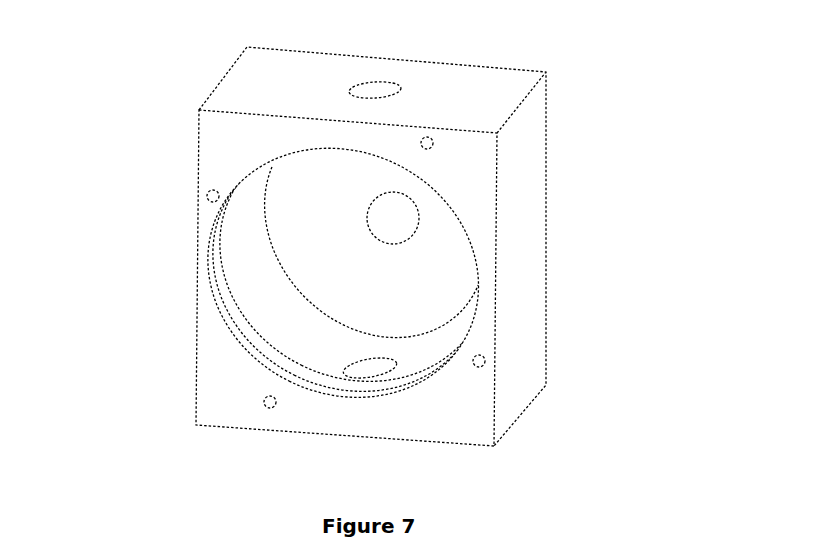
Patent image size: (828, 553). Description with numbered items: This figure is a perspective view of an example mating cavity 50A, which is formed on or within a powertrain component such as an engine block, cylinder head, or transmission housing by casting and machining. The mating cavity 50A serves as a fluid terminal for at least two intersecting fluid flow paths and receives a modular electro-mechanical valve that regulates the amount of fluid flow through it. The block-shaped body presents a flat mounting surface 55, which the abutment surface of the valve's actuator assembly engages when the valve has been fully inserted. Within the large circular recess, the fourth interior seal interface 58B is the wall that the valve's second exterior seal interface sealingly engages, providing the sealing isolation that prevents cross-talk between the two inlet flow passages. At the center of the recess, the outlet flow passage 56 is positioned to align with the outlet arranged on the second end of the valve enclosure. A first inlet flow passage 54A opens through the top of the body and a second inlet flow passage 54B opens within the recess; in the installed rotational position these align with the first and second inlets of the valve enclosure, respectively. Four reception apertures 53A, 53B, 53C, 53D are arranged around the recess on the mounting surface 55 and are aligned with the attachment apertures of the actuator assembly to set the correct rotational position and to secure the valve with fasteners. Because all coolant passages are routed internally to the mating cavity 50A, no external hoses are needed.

The mating cavity 50A is at (567, 78).
The mounting surface 55 is at (220, 137).
The fourth interior seal interface 58B is at (407, 372).
The outlet flow passage 56 is at (405, 221).
The first inlet flow passage 54A is at (367, 90).
The second inlet flow passage 54B is at (362, 370).
The reception aperture 53A is at (432, 143).
The reception aperture 53B is at (483, 362).
The reception aperture 53C is at (268, 402).
The reception aperture 53D is at (212, 196).